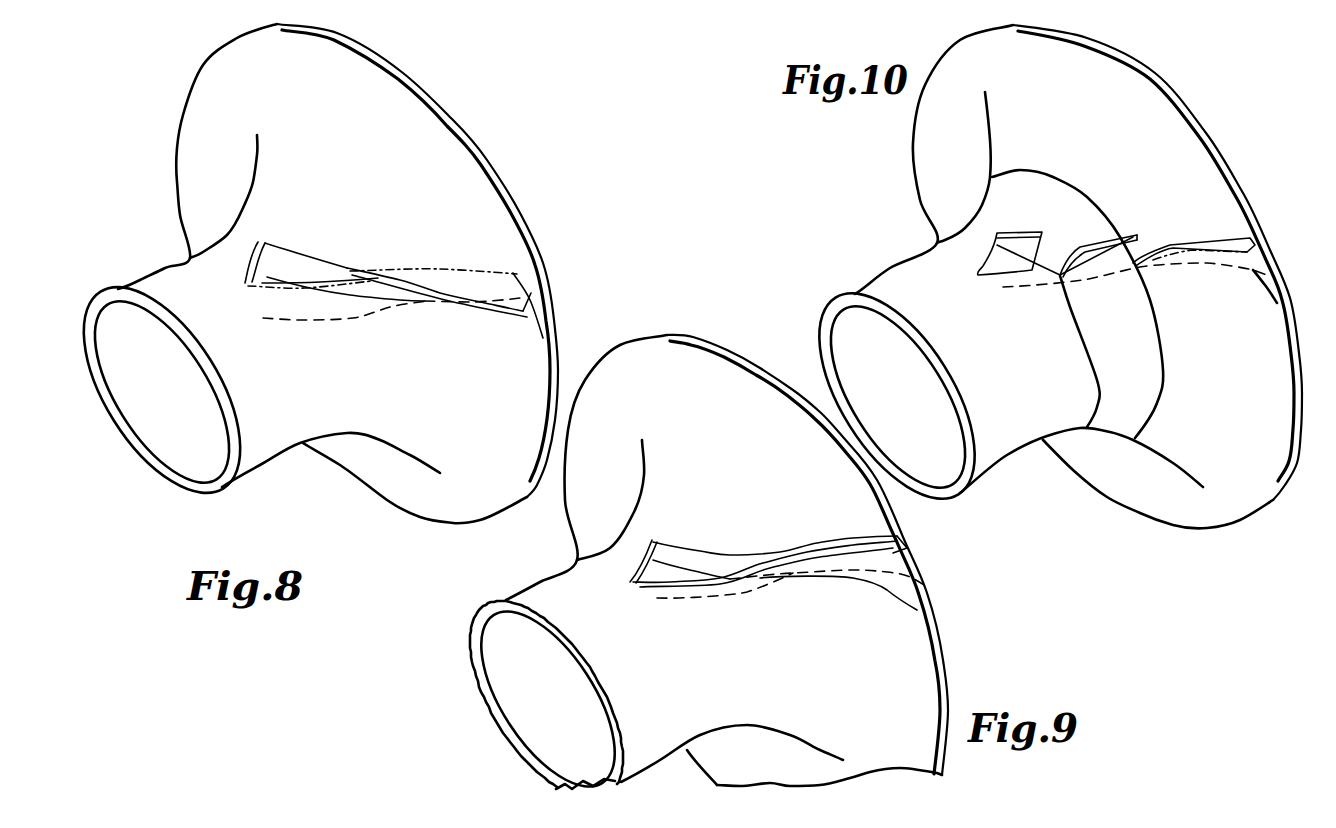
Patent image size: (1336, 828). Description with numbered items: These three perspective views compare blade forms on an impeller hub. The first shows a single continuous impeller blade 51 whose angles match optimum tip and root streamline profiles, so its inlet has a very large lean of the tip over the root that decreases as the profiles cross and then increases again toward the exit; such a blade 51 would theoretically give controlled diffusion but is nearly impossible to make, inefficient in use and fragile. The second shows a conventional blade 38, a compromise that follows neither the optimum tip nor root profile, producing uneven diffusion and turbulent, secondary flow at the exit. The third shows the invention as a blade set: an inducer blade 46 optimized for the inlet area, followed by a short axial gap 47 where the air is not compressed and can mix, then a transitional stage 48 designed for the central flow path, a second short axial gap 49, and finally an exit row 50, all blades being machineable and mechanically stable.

In FIG. 9, the conventional blade 38 is at (677, 557).
In FIG. 10, the inducer blade 46 is at (1023, 245).
In FIG. 10, the axial gap 47 is at (1048, 270).
In FIG. 10, the transitional stage 48 is at (1064, 265).
In FIG. 10, the axial gap 49 is at (1120, 260).
In FIG. 10, the exit row 50 is at (1153, 243).
In FIG. 8, the continuous impeller blade 51 is at (297, 267).